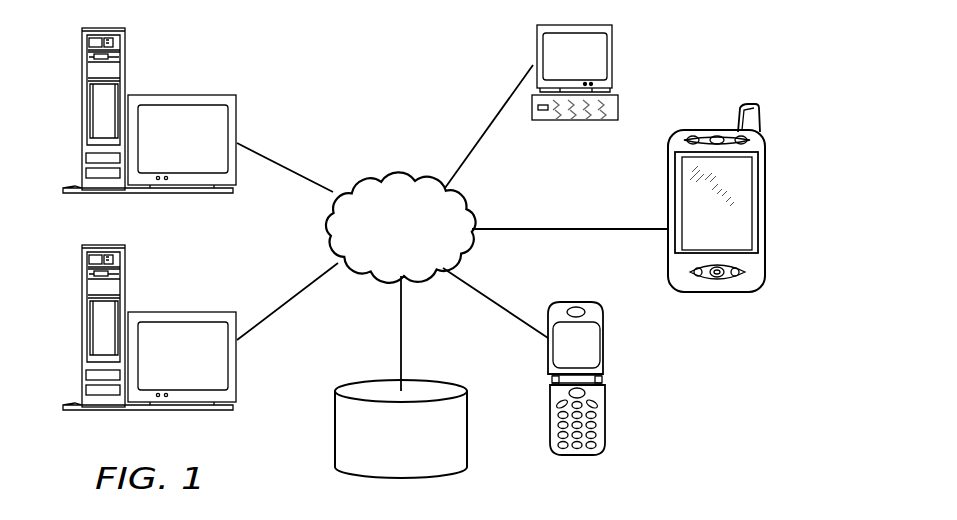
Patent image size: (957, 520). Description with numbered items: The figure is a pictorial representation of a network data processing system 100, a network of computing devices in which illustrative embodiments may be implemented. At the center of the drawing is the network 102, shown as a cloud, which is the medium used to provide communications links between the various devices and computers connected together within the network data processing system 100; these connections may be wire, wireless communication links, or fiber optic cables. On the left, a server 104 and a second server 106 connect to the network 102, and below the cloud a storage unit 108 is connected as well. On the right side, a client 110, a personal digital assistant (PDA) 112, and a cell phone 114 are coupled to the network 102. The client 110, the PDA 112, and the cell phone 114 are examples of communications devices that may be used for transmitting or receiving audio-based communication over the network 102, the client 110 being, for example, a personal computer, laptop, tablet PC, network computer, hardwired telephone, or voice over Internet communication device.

The network data processing system 100 is at (293, 60).
The network 102 is at (370, 178).
The server 104 is at (79, 109).
The server 106 is at (79, 333).
The storage unit 108 is at (367, 380).
The client 110 is at (612, 58).
The personal digital assistant (PDA) 112 is at (765, 196).
The cell phone 114 is at (605, 340).